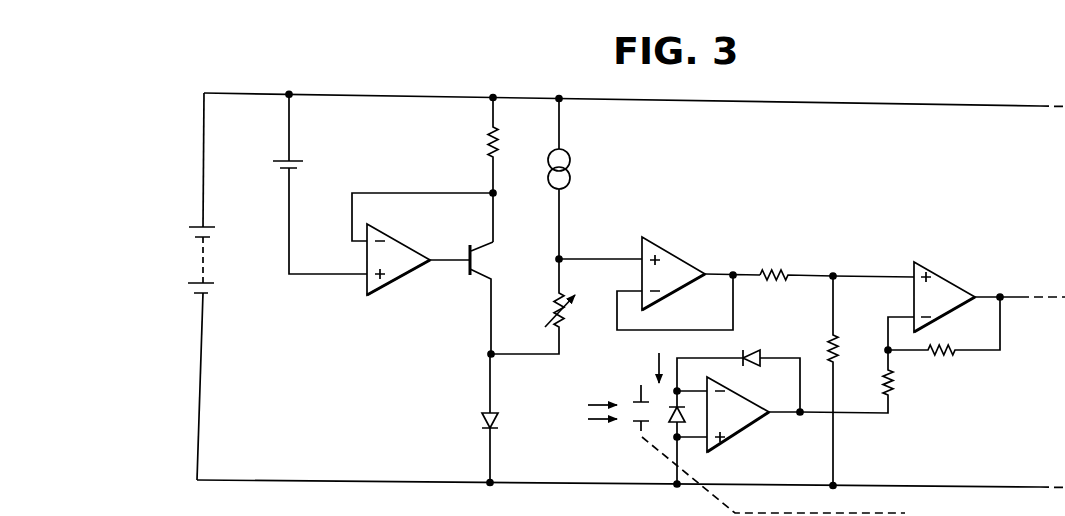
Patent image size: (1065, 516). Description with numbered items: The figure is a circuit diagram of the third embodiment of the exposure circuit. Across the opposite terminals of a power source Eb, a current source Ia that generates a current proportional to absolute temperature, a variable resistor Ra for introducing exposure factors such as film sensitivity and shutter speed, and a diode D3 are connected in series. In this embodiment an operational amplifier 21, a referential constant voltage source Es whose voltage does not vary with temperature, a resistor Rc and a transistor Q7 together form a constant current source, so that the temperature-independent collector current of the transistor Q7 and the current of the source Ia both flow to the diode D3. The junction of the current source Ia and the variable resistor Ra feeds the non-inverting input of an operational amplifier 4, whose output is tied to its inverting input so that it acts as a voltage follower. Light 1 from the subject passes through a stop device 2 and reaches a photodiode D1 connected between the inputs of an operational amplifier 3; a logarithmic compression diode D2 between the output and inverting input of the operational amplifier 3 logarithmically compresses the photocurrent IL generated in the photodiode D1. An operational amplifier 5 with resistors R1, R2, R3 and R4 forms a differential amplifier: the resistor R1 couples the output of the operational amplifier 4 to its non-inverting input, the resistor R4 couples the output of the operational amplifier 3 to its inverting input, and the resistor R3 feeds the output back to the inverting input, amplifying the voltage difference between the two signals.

The power source Eb is at (210, 282).
The referential constant voltage source Es is at (303, 165).
The operational amplifier 21 is at (398, 285).
The resistor Rc is at (489, 142).
The transistor Q7 is at (478, 248).
The variable resistor Ra is at (551, 312).
The current source Ia is at (571, 165).
The diode D3 is at (481, 419).
The operational amplifier 4 is at (687, 255).
The resistor R1 is at (772, 268).
The resistor R2 is at (829, 345).
The operational amplifier 5 is at (953, 273).
The resistor R3 is at (944, 355).
The resistor R4 is at (884, 384).
The operational amplifier 3 is at (745, 431).
The logarithmic compression diode D2 is at (748, 352).
The photodiode D1 is at (684, 427).
The stop device 2 is at (641, 431).
The incident light 1 is at (597, 419).
The photocurrent IL is at (658, 357).